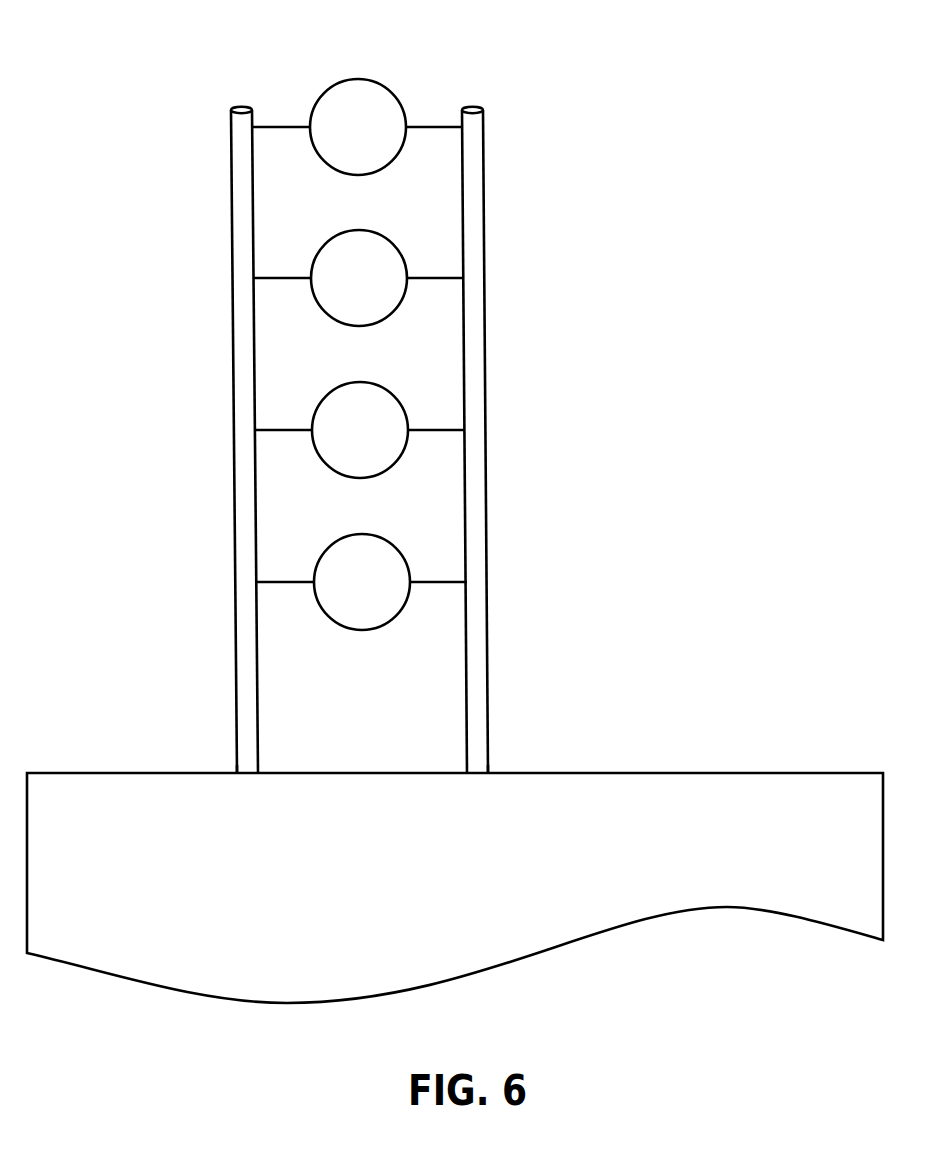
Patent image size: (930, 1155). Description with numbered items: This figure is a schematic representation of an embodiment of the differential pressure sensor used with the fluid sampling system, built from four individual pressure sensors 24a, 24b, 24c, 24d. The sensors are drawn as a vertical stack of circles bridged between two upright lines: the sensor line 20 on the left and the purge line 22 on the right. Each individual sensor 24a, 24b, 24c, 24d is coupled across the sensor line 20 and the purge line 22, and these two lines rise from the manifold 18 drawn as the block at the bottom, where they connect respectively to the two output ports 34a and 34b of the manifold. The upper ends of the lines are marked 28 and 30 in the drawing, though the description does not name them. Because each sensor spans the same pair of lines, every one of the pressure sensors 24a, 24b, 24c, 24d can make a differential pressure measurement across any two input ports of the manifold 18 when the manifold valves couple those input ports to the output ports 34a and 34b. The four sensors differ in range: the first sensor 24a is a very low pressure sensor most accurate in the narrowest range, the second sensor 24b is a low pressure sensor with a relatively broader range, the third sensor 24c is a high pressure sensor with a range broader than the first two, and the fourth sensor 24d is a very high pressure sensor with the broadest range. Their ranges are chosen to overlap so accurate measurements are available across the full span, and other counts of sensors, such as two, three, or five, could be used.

The manifold 18 is at (475, 880).
The sensor line 20 is at (231, 229).
The purge line 22 is at (485, 203).
The first sensor 24a is at (357, 78).
The second sensor 24b is at (322, 247).
The third sensor 24c is at (323, 399).
The fourth sensor 24d is at (325, 551).
The first post tip 28 is at (242, 106).
The second post tip 30 is at (473, 106).
The output port 34a is at (237, 772).
The output port 34b is at (488, 772).